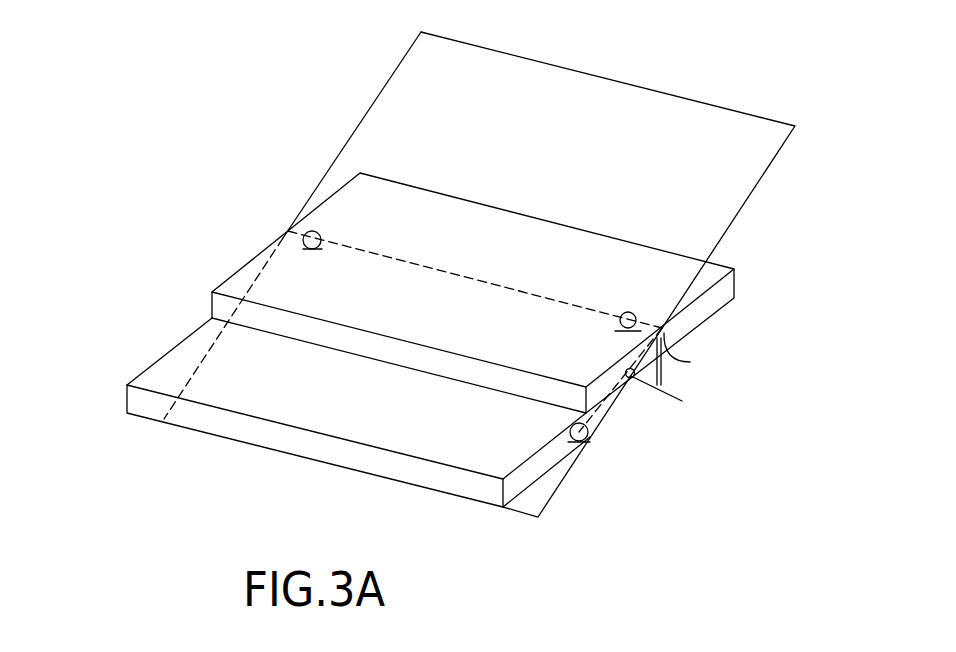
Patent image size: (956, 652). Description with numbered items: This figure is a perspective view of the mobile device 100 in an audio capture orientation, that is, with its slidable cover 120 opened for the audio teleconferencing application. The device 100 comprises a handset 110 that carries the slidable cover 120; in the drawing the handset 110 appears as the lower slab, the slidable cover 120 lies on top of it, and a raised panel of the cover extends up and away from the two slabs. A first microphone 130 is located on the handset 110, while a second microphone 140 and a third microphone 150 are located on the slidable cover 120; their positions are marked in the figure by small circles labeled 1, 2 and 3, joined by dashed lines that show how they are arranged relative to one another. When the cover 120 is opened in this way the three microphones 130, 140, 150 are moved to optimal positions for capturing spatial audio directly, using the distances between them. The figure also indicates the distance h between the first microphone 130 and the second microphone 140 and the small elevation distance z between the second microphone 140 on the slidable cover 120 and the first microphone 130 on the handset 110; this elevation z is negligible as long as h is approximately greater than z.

The mobile device 100 is at (362, 497).
The handset 110 is at (182, 350).
The slidable cover 120 is at (240, 282).
The first microphone 130 is at (590, 432).
The second microphone 140 is at (641, 314).
The third microphone 150 is at (303, 233).
The point 1 is at (574, 437).
The point 2 is at (628, 309).
The point 3 is at (318, 230).